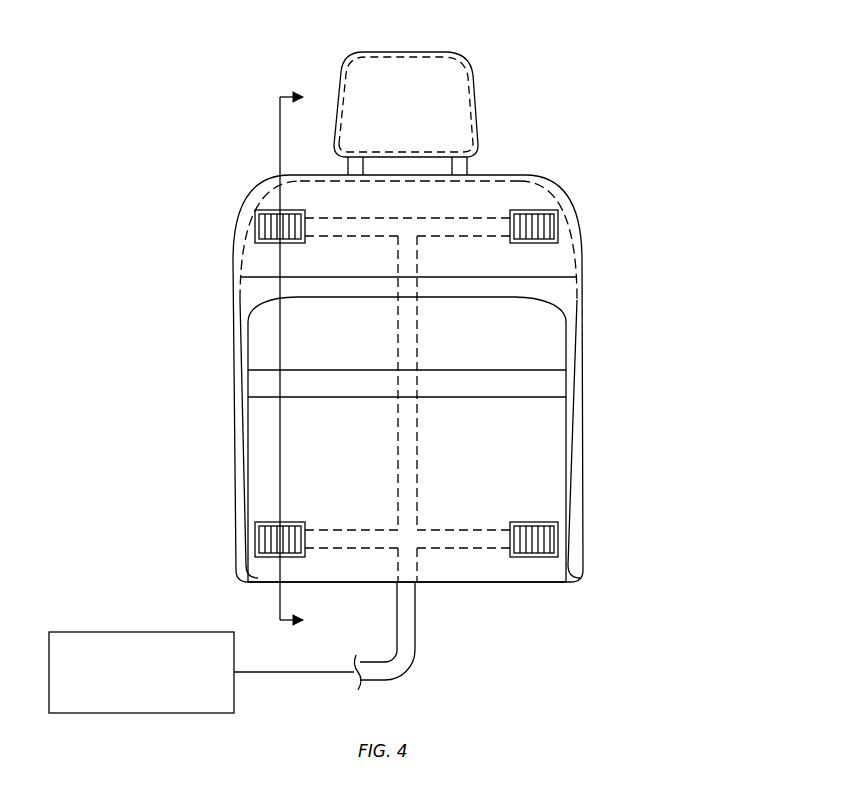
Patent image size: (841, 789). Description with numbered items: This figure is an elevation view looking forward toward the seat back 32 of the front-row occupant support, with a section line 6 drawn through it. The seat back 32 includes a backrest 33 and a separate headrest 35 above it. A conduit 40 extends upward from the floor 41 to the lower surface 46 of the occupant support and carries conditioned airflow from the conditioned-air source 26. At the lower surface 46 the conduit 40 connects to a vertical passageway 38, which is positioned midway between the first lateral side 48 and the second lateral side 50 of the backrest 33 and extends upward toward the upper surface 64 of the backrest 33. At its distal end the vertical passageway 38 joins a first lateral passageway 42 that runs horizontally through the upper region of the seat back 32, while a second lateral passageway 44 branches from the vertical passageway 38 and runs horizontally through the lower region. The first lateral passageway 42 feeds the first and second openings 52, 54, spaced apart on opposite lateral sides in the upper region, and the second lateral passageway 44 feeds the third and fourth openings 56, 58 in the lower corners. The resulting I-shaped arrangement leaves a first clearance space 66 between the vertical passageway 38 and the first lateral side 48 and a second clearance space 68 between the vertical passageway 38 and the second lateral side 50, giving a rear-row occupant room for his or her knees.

The section line 6- 6 is at (299, 360).
The conditioned-air source 26 is at (98, 632).
The seat back 32 is at (630, 185).
The backrest 33 is at (598, 290).
The headrest 35 is at (488, 46).
The vertical passageway 38 is at (420, 440).
The conduit 40 is at (418, 606).
The floor 41 is at (358, 680).
The first lateral passageway 42 is at (486, 213).
The second lateral passageway 44 is at (463, 525).
The lower surface 46 is at (532, 583).
The first lateral side 48 is at (232, 265).
The second lateral side 50 is at (583, 312).
The first opening 52 is at (270, 206).
The second opening 54 is at (537, 207).
The third opening 56 is at (270, 561).
The fourth opening 58 is at (538, 561).
The upper surface 64 is at (532, 175).
The first clearance space 66 is at (300, 458).
The second clearance space 68 is at (527, 455).